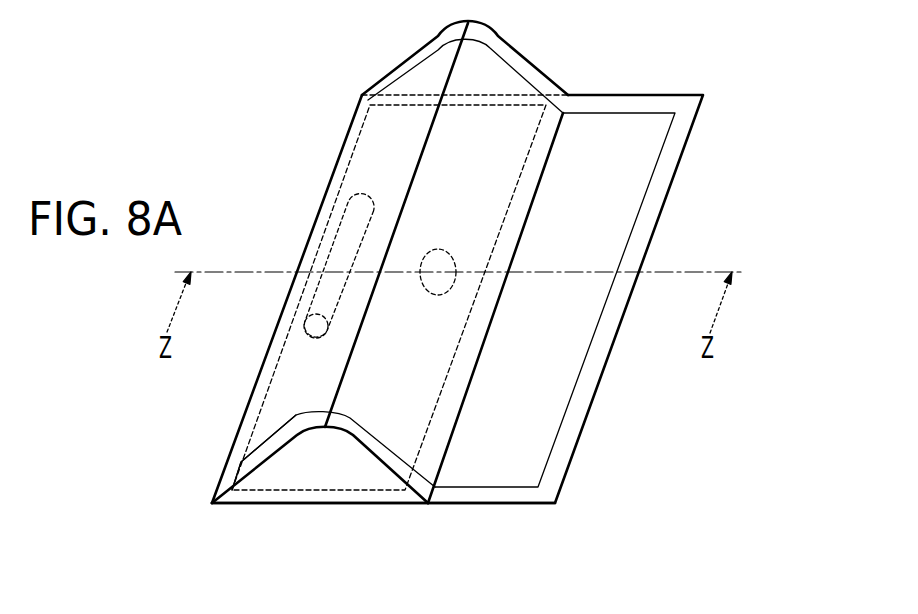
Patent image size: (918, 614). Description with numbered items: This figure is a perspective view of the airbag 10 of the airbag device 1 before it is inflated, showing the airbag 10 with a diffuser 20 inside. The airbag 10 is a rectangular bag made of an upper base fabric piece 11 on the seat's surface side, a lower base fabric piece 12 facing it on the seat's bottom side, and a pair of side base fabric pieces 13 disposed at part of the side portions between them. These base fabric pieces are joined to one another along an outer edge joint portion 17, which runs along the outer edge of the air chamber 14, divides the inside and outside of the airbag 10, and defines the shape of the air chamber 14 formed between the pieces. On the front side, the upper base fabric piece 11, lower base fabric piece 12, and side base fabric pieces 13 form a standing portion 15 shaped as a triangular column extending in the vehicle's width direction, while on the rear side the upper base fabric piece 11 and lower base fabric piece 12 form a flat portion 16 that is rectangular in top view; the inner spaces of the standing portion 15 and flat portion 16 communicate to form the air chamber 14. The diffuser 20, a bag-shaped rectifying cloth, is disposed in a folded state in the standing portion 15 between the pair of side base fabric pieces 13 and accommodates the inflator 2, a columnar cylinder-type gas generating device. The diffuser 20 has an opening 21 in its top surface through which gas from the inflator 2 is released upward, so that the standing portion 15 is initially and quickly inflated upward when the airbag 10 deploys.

The airbag device 1 is at (288, 92).
The inflator 2 is at (320, 305).
The airbag 10 is at (671, 188).
The upper base fabric piece 11 is at (283, 413).
The lower base fabric piece 12 is at (243, 505).
The side base fabric pieces 13 is at (518, 56).
The air chamber 14 is at (383, 162).
The standing portion 15 is at (300, 506).
The flat portion 16 is at (505, 506).
The outer edge joint portion 17 is at (567, 410).
The diffuser 20 is at (478, 205).
The opening 21 is at (442, 283).